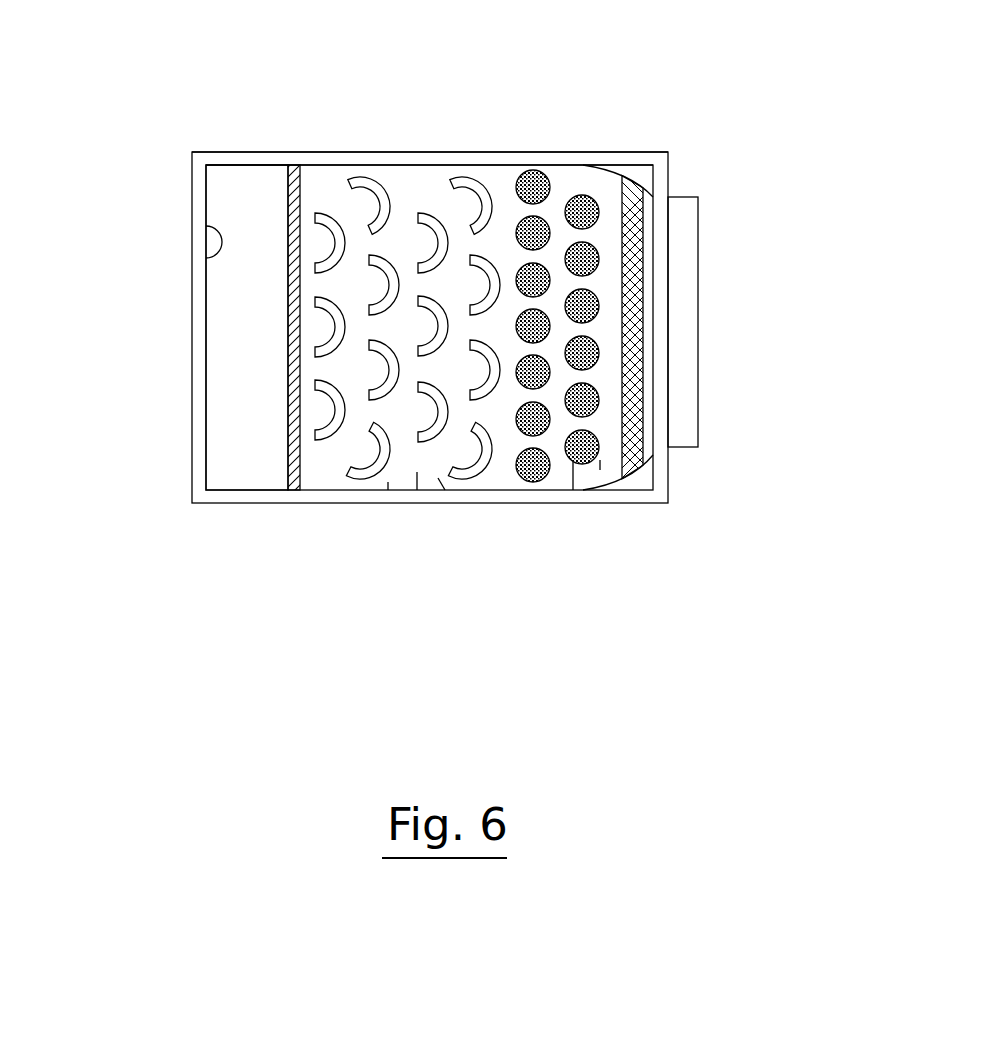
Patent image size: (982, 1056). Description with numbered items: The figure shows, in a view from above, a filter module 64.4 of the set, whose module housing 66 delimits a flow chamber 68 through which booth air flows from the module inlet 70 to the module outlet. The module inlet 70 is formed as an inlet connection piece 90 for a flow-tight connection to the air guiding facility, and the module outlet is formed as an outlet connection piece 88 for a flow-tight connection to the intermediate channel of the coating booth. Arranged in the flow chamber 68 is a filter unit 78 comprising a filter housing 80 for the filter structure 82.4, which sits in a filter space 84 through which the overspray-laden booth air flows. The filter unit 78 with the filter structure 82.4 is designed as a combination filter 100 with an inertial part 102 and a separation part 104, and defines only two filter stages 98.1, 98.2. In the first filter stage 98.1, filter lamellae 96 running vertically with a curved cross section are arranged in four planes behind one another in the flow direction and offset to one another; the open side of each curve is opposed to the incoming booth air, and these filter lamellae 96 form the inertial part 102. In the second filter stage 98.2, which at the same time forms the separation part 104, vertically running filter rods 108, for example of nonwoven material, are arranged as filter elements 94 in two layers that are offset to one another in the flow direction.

The filter module 64.4 is at (254, 162).
The module housing 66 is at (468, 158).
The flow chamber 68 is at (222, 425).
The module inlet 70 is at (207, 252).
The filter unit 78 is at (576, 162).
The filter housing 80 is at (634, 176).
The filter structure 82.4 is at (436, 152).
The filter space 84 is at (503, 463).
The outlet connection piece 88 is at (689, 188).
The inlet connection piece 90 is at (186, 200).
The filter elements 94 is at (363, 494).
The filter lamellae 96 is at (372, 188).
The first filter stage 98.1 is at (388, 496).
The second filter stage 98.2 is at (602, 476).
The combination filter 100 is at (416, 486).
The inertial part 102 is at (444, 492).
The separation part 104 is at (574, 477).
The filter rods 108 is at (540, 178).